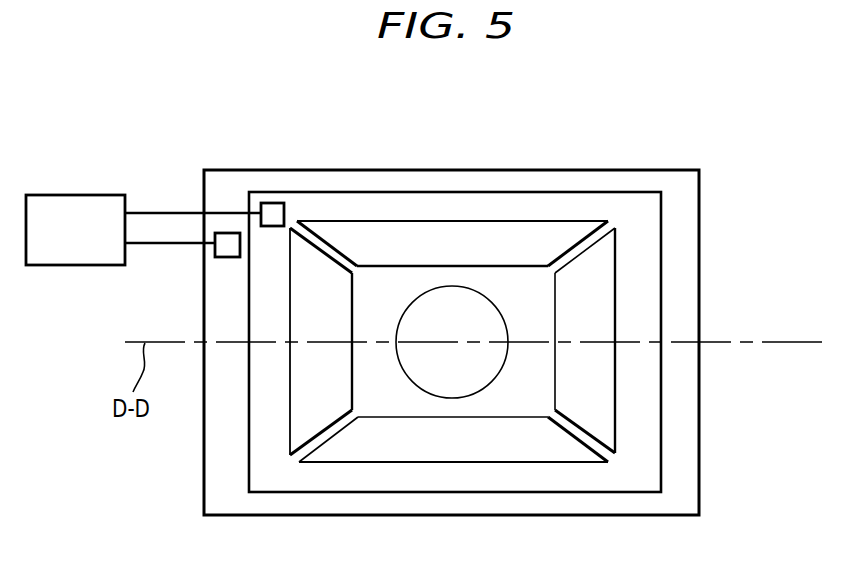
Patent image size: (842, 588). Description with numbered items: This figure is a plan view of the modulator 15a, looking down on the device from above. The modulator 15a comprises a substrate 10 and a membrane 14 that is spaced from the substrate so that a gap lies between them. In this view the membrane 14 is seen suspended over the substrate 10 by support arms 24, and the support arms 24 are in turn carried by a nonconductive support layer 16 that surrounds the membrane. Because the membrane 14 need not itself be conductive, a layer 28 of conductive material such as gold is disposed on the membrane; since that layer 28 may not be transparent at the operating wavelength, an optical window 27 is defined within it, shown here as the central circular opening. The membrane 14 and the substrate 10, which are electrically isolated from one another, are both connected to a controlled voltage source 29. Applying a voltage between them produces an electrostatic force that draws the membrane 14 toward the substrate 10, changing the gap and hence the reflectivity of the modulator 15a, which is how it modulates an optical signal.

The substrate 10 is at (234, 169).
The membrane 14 is at (389, 405).
The modulator 15a is at (662, 105).
The nonconductive support layer 16 is at (436, 218).
The support arms 24 is at (315, 248).
The optical window 27 is at (480, 312).
The layer of conductive material 28 is at (389, 275).
The controlled voltage source 29 is at (68, 266).